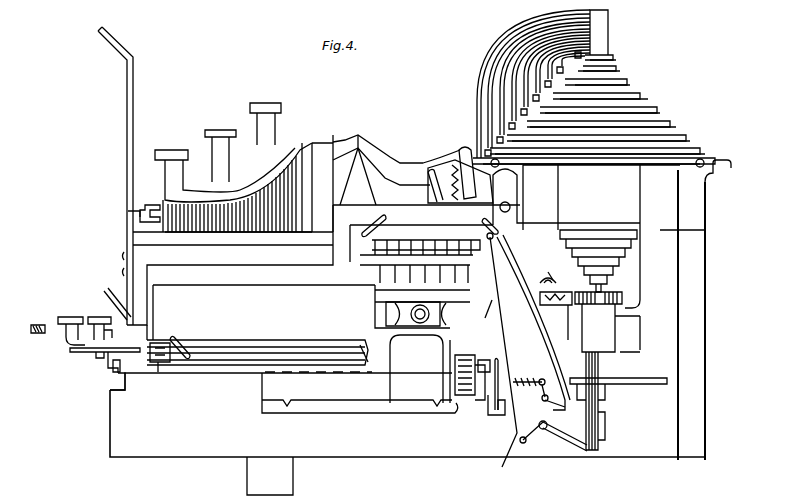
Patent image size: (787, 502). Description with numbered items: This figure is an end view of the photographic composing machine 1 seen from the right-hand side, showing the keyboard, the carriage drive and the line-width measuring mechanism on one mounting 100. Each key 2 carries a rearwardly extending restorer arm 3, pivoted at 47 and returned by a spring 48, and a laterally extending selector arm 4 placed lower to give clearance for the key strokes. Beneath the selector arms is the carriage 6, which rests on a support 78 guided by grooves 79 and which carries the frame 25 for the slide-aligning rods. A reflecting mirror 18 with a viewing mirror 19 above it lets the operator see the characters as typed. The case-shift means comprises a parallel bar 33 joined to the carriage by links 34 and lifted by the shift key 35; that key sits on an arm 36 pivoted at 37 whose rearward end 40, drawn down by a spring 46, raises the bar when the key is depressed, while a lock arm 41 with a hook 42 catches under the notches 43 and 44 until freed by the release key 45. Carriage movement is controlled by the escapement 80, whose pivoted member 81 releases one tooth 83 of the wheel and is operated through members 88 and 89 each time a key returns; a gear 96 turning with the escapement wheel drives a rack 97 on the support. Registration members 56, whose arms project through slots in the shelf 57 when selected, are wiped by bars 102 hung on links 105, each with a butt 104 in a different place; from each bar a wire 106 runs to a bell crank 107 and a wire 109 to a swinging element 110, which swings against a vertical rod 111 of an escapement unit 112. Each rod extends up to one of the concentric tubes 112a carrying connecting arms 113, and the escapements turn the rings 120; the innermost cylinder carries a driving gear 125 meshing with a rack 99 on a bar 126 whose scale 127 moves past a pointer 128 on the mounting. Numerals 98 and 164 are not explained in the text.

The typewriter assembly 1 is at (222, 96).
The key 2 is at (177, 150).
The restorer arm 3 is at (373, 153).
The selector arm 4 is at (144, 205).
The carriage 6 is at (200, 345).
The reflecting mirror 18 is at (104, 291).
The viewing mirror 19 is at (126, 47).
The frame 25 is at (37, 333).
The parallel bar 33 is at (272, 345).
The links 34 is at (360, 342).
The shift key 35 is at (96, 317).
The arm 36 is at (97, 358).
The pivot 37 is at (160, 343).
The rearward end 40 is at (178, 340).
The lock arm 41 is at (85, 352).
The hook 42 is at (108, 368).
The notch 43 is at (113, 372).
The notch 44 is at (120, 390).
The release key 45 is at (68, 317).
The spring 46 is at (158, 375).
The pivot 47 is at (358, 135).
The springs 48 is at (446, 165).
The registration member 56 is at (432, 306).
The shelf 57 is at (470, 290).
The support 78 is at (392, 405).
The grooves 79 is at (288, 400).
The escapement 80 is at (486, 359).
The pivoted member 81 is at (494, 418).
The tooth 83 is at (499, 378).
The member 88 is at (557, 382).
The member 89 is at (513, 440).
The gear 96 is at (470, 400).
The rack 97 is at (465, 367).
The stop 98 is at (128, 211).
The rack 99 is at (568, 328).
The mounting 100 is at (705, 205).
The bar 102 is at (493, 238).
The butt 104 is at (483, 247).
The links 105 is at (390, 222).
The wire 106 is at (505, 320).
The bell crank 107 is at (560, 440).
The wire 109 is at (599, 430).
The swinging element 110 is at (600, 404).
The vertical rod 111 is at (600, 368).
The escapement unit 112 is at (636, 56).
The concentric tubes 112a is at (614, 340).
The connecting arms 113 is at (528, 45).
The ring 120 is at (650, 125).
The driving gear 125 is at (627, 300).
The bar 126 is at (548, 310).
The scale 127 is at (561, 269).
The pointer 128 is at (540, 284).
The guide 164 is at (416, 254).